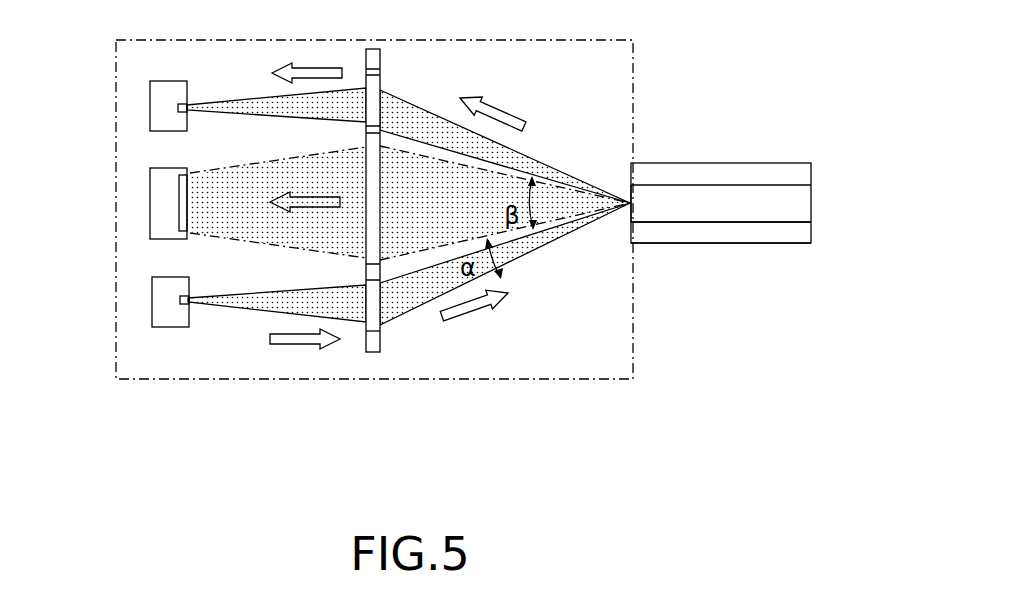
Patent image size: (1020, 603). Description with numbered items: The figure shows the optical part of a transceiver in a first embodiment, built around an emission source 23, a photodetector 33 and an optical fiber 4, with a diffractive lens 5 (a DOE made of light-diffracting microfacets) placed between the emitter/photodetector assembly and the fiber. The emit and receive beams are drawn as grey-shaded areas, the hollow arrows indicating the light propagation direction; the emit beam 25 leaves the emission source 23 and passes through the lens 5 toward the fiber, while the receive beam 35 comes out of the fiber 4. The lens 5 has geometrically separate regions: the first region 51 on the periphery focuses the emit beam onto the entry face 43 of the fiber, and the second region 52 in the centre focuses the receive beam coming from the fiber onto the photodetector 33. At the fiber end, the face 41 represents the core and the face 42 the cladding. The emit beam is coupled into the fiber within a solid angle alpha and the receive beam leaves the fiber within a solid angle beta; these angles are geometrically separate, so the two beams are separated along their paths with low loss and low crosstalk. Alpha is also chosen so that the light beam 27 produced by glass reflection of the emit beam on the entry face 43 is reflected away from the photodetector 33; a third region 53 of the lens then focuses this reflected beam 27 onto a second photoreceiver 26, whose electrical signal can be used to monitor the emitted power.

The optical fiber 4 is at (724, 196).
The core face 41 is at (790, 203).
The cladding face 42 is at (728, 233).
The entry face of the optical fiber 43 is at (630, 218).
The diffractive lens 5 is at (355, 243).
The first region 51 is at (373, 307).
The second region 52 is at (366, 228).
The third region 53 is at (370, 91).
The emission source 23 is at (167, 312).
The illumination beam 25 is at (542, 240).
The second photoreceiver 26 is at (160, 113).
The reflected light beam 27 is at (427, 127).
The photodetector 33 is at (160, 217).
The light cone at fiber end 35 is at (560, 203).